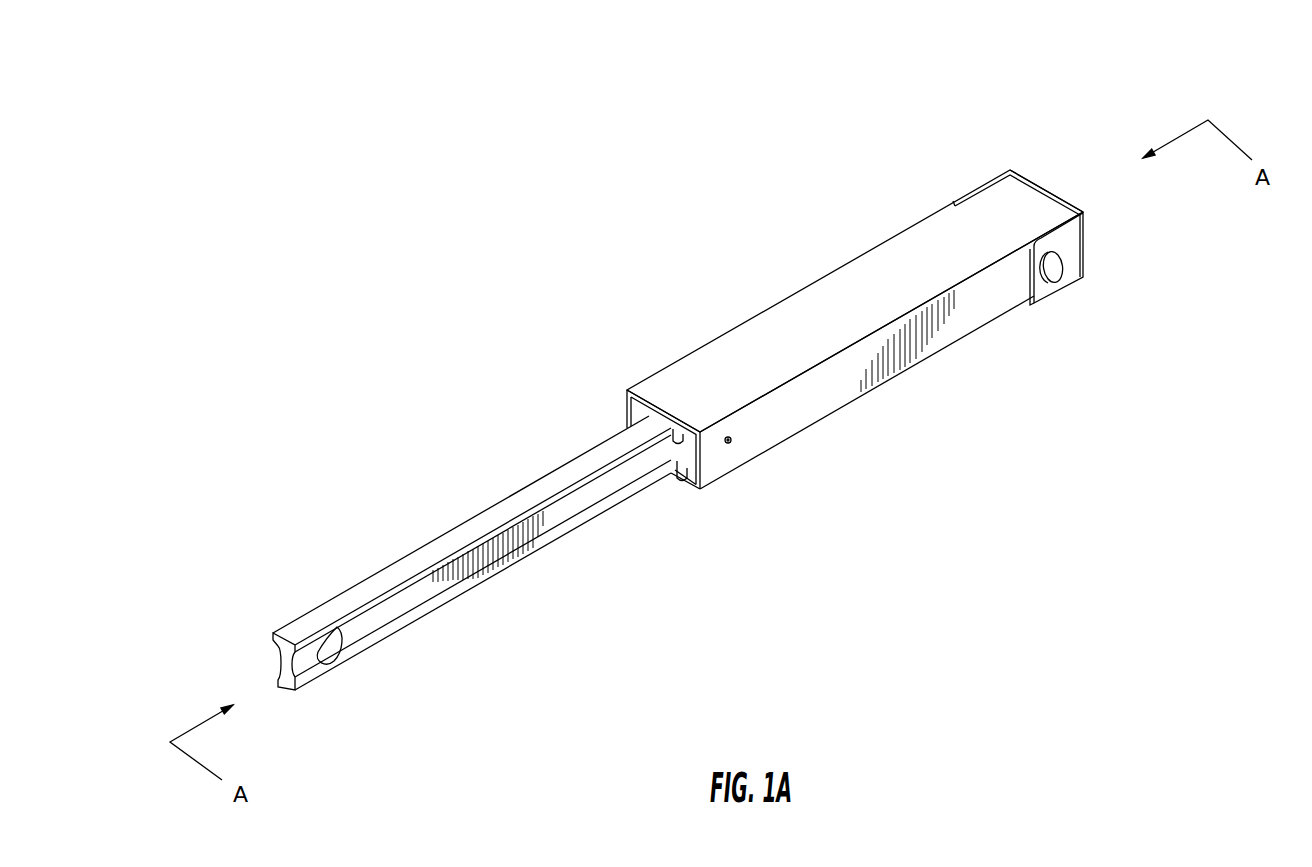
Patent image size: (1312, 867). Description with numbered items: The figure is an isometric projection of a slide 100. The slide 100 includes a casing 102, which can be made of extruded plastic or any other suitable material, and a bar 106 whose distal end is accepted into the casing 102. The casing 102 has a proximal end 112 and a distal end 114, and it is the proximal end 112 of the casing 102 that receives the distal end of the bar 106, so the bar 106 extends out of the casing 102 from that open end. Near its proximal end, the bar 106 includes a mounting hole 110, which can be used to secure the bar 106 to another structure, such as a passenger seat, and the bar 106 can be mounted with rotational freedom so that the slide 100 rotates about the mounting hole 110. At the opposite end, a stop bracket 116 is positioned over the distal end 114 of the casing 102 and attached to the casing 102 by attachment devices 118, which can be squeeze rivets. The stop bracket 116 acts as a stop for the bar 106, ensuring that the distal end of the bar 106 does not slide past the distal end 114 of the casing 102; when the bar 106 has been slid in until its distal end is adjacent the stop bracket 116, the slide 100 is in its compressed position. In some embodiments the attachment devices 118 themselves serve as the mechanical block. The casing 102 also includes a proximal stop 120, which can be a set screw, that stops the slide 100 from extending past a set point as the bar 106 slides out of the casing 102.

The slide 100 is at (368, 235).
The casing 102 is at (750, 343).
The bar 106 is at (398, 572).
The mounting hole 110 is at (367, 660).
The proximal end of casing 112 is at (663, 500).
The distal end of casing 114 is at (1043, 178).
The stop bracket 116 is at (1077, 232).
The attachment devices 118 is at (1055, 267).
The proximal stop 120 is at (763, 462).